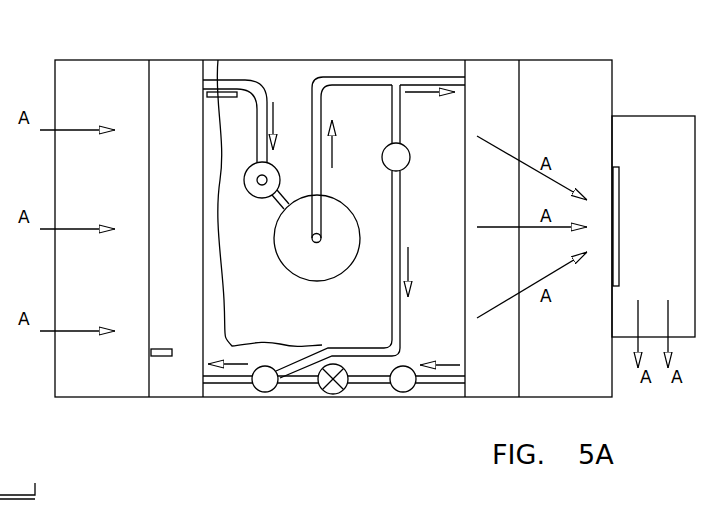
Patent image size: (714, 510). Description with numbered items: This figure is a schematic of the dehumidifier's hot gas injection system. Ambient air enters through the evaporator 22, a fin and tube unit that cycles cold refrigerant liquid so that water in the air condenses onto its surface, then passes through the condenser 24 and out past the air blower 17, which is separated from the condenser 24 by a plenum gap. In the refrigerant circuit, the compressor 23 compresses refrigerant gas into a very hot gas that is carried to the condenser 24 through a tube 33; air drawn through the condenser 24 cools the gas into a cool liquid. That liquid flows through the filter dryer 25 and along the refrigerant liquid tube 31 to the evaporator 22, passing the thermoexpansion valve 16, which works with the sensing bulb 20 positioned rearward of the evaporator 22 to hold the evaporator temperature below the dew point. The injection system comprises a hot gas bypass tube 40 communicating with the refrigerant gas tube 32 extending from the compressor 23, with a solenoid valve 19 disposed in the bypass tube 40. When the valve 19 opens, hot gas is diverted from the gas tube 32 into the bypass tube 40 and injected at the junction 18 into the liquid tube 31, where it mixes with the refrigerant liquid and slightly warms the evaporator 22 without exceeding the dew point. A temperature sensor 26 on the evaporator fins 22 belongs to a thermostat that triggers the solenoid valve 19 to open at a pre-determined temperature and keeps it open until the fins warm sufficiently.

The thermoexpansion valve 16 is at (330, 394).
The air blower 17 is at (661, 116).
The junction 18 is at (262, 392).
The solenoid valve 19 is at (405, 150).
The thermoexpansion valve sensing bulb 20 is at (218, 72).
The evaporator 22 is at (178, 68).
The compressor 23 is at (276, 240).
The condenser 24 is at (497, 65).
The filter dryer 25 is at (408, 392).
The temperature sensor 26 is at (165, 356).
The refrigerant liquid tube 31 is at (371, 385).
The refrigerant gas tube 32 is at (372, 77).
The tube 33 is at (258, 90).
The hot gas bypass tube 40 is at (400, 193).